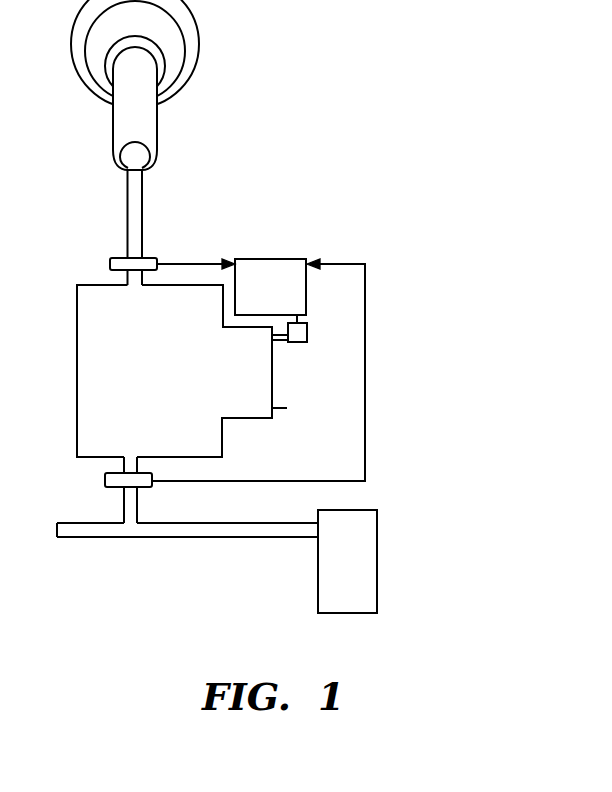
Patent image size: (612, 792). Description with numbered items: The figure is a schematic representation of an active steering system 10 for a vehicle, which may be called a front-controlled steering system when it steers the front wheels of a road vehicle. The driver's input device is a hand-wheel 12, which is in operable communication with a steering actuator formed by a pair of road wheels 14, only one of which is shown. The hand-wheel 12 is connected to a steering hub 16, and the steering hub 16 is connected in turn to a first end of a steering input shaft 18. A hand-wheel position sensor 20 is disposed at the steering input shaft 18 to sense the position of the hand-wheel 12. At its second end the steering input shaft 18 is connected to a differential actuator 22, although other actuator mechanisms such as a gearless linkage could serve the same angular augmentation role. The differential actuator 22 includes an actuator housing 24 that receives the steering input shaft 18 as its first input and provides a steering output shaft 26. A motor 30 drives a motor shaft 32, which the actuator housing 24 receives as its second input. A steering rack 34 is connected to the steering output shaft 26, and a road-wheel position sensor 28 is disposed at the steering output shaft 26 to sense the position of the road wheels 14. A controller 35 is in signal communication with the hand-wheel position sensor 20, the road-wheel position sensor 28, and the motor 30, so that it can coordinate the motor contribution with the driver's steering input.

The active steering system 10 is at (322, 102).
The hand-wheel 12 is at (198, 34).
The road wheels 14 is at (377, 553).
The steering hub 16 is at (157, 134).
The steering input shaft 18 is at (142, 212).
The hand-wheel position sensor 20 is at (157, 262).
The differential actuator 22 is at (400, 355).
The actuator housing 24 is at (272, 388).
The steering output shaft 26 is at (138, 460).
The road-wheel position sensor 28 is at (105, 476).
The motor 30 is at (307, 332).
The motor shaft 32 is at (282, 343).
The steering rack 34 is at (245, 524).
The controller 35 is at (283, 259).